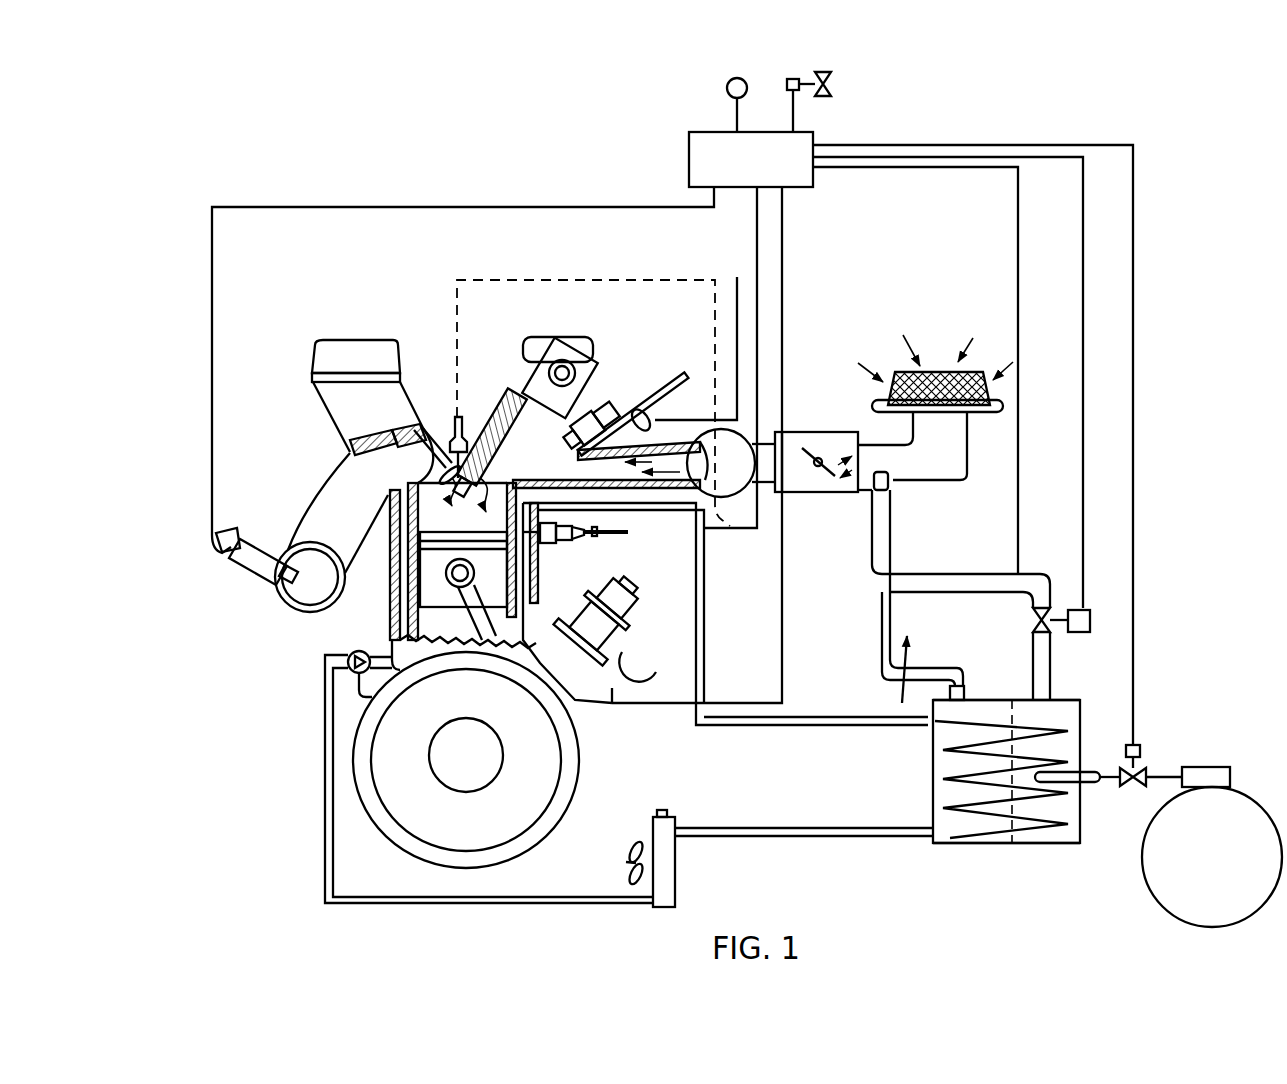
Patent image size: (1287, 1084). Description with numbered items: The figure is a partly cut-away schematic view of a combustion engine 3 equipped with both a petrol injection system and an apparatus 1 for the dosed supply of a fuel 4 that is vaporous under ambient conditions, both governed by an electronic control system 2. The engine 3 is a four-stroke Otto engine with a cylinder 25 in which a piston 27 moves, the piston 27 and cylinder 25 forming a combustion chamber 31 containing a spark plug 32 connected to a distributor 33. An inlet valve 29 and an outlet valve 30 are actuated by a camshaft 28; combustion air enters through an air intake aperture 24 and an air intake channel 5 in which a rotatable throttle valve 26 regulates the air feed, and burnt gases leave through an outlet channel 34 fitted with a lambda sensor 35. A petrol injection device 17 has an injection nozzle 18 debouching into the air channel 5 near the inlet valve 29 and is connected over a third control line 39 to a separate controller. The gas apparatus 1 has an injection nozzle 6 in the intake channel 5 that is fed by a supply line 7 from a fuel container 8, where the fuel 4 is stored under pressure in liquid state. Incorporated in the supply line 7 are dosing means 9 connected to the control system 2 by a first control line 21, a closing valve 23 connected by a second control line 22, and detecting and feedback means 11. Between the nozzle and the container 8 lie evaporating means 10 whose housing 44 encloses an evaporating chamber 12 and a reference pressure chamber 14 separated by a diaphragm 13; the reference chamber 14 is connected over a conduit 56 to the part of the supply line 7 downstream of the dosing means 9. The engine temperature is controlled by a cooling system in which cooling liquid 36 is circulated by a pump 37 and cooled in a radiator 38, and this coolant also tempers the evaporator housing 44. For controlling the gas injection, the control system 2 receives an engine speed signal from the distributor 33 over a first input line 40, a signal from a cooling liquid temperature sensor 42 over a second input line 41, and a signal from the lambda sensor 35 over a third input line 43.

The apparatus for dosed supply of gaseous fuel 1 is at (1086, 853).
The electronic control system 2 is at (758, 176).
The combustion engine 3 is at (575, 604).
The fuel 4 is at (880, 448).
The air intake channel 5 is at (960, 465).
The injection nozzle 6 is at (890, 473).
The supply line 7 is at (1052, 668).
The fuel container 8 is at (1231, 862).
The dosing means 9 is at (1063, 602).
The evaporating means 10 is at (930, 777).
The detecting and feedback means 11 is at (958, 169).
The evaporating chamber 12 is at (1050, 833).
The diaphragm 13 is at (1008, 703).
The reference pressure chamber 14 is at (980, 838).
The petrol injection device 17 is at (657, 376).
The petrol injection nozzle 18 is at (618, 410).
The first control line 21 is at (1083, 430).
The second control line 22 is at (1160, 467).
The closing valve 23 is at (1148, 762).
The air intake aperture 24 is at (937, 372).
The cylinder 25 is at (632, 604).
The throttle valve 26 is at (815, 450).
The piston 27 is at (480, 612).
The camshaft 28 is at (560, 355).
The inlet valve 29 is at (510, 470).
The outlet valve 30 is at (352, 487).
The combustion chamber 31 is at (449, 525).
The spark plug 32 is at (472, 462).
The distributor 33 is at (586, 632).
The outlet channel 34 is at (331, 513).
The lambda sensor 35 is at (258, 566).
The cooling liquid 36 is at (400, 668).
The pump 37 is at (345, 675).
The radiator 38 is at (668, 870).
The third control line 39 is at (668, 420).
The first input line 40 is at (672, 706).
The second input line 41 is at (754, 530).
The cooling liquid temperature sensor 42 is at (583, 555).
The third input line 43 is at (212, 323).
The evaporator housing 44 is at (1000, 848).
The conduit 56 is at (881, 624).